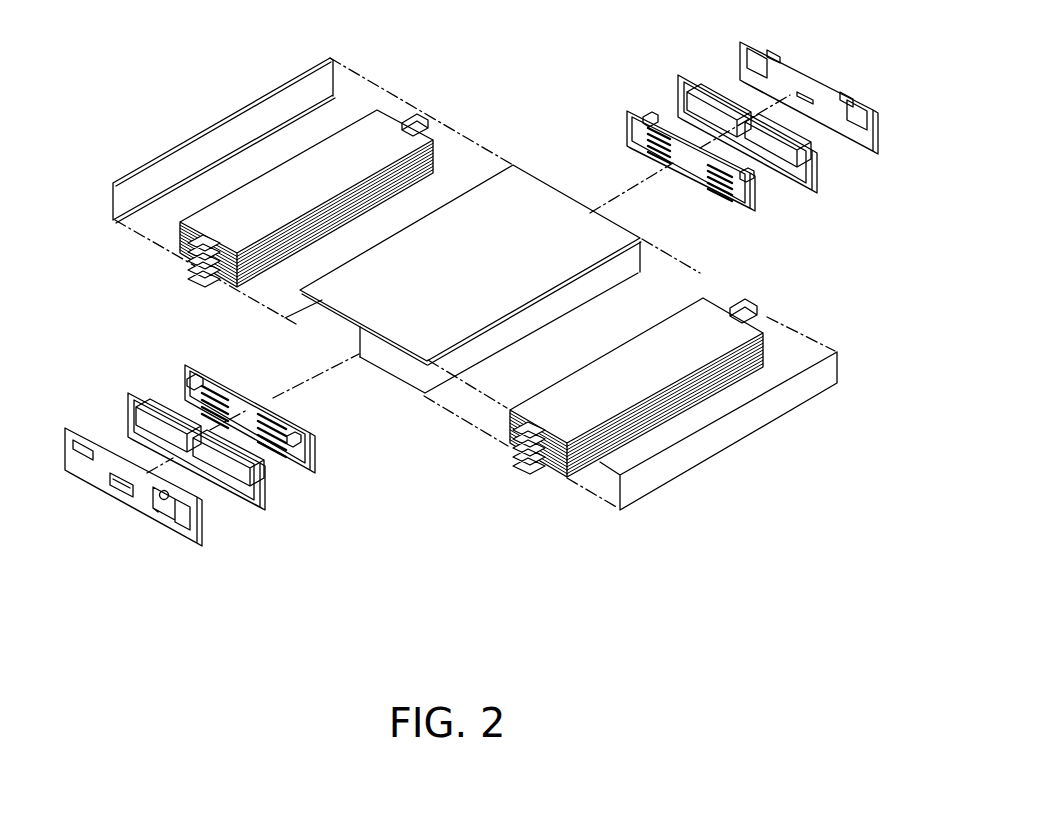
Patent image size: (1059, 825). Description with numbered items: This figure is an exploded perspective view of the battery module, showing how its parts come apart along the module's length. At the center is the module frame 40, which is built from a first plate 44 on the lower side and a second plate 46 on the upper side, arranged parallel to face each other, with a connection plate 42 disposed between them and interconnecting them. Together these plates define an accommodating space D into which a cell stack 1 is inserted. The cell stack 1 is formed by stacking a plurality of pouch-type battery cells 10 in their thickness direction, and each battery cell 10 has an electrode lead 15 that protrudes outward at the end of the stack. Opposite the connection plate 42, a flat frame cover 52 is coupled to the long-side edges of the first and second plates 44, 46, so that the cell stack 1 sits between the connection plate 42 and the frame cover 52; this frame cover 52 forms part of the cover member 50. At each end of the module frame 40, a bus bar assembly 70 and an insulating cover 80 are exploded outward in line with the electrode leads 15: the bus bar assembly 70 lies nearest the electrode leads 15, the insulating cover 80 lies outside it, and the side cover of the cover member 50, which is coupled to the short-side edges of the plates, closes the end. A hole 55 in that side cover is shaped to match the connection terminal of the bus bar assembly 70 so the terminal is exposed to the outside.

The cell stack 1 is at (236, 183).
The battery cells 10 is at (302, 165).
The electrode lead 15 is at (198, 279).
The module frame 40 is at (408, 410).
The connection plate 42 is at (367, 338).
The first plate 44 is at (390, 363).
The second plate 46 is at (540, 195).
The accommodating space D is at (573, 284).
The cover member 50 is at (686, 326).
The frame cover 52 is at (753, 417).
The hole 55 is at (172, 522).
The bus bar assembly 70 is at (608, 120).
The insulating cover 80 is at (663, 86).